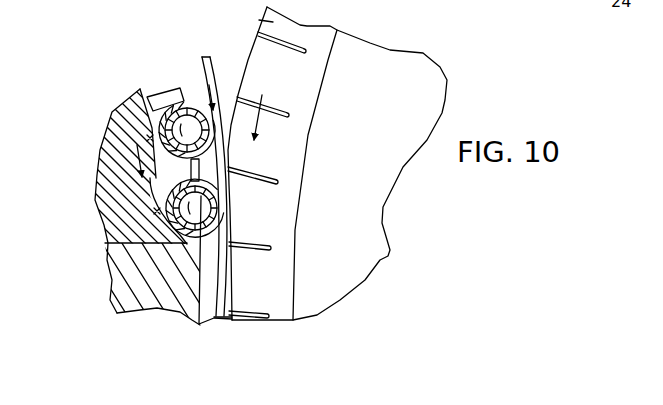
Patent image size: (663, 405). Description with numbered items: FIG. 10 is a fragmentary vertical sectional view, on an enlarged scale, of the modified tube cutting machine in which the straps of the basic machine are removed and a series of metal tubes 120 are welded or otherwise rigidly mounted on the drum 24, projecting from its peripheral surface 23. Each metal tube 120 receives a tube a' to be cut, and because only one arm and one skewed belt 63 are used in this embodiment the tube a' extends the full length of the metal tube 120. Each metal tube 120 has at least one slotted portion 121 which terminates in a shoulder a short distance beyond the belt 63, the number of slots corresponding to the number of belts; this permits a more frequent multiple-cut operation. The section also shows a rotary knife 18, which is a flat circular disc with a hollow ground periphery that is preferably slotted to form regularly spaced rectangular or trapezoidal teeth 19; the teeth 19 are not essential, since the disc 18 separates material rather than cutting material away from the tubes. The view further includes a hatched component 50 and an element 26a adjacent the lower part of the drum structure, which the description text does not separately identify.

The rotary knife 18 is at (433, 79).
The teeth 19 is at (259, 20).
The tube a' is at (216, 175).
The metal tube 120 is at (165, 100).
The slotted portion 121 is at (194, 164).
The drum 24 is at (122, 153).
The peripheral surface 23 is at (165, 198).
The lower hatched body 50 is at (116, 283).
The bottom plate 26a is at (190, 328).
The skewed belt 63 is at (233, 292).